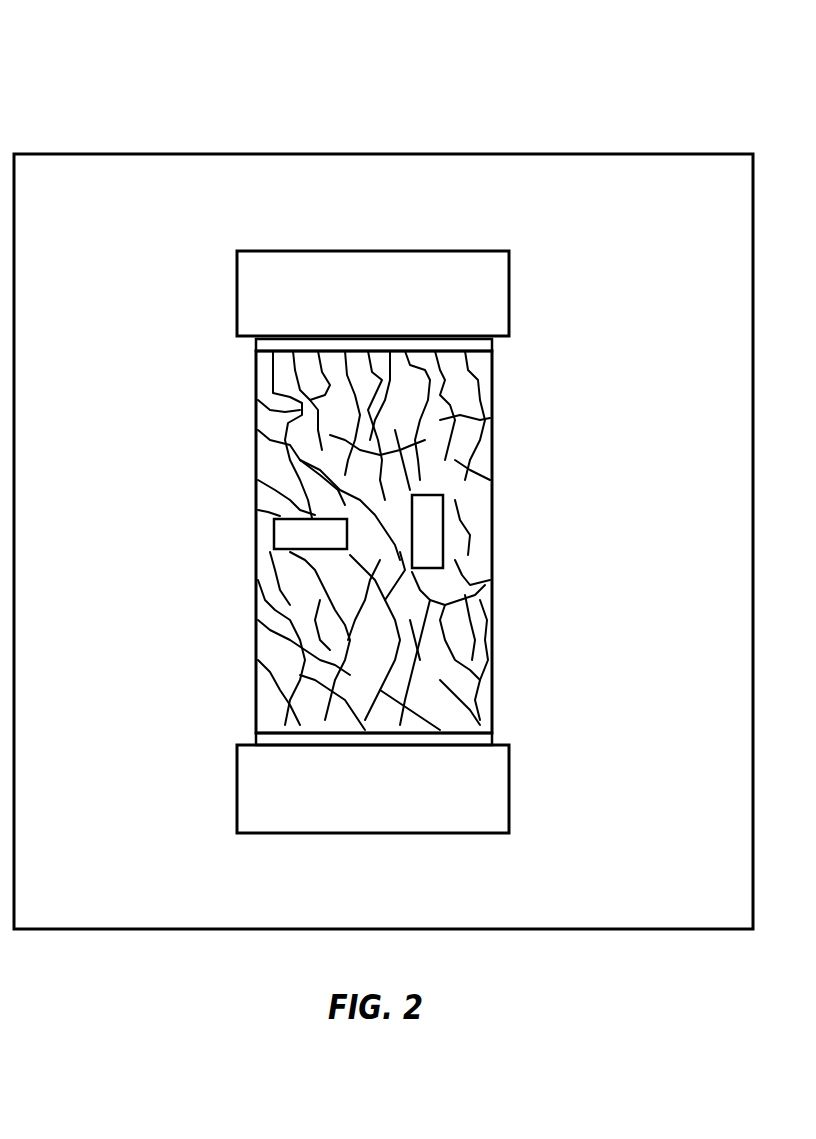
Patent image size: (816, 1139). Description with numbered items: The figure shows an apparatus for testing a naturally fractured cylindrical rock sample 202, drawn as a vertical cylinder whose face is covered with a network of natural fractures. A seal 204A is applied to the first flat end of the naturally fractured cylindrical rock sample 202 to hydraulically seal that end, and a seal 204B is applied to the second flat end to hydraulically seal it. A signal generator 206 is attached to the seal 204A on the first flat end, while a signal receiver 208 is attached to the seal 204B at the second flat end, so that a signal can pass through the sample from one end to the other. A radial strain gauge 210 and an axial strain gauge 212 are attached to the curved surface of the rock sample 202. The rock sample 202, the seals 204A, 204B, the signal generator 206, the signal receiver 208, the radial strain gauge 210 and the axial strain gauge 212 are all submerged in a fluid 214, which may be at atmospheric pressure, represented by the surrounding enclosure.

The naturally fractured cylindrical rock sample 202 is at (493, 442).
The seal 204A is at (256, 342).
The seal 204B is at (256, 740).
The signal generator 206 is at (510, 296).
The signal receiver 208 is at (510, 788).
The radial strain gauge 210 is at (274, 533).
The axial strain gauge 212 is at (443, 531).
The fluid 214 is at (491, 188).